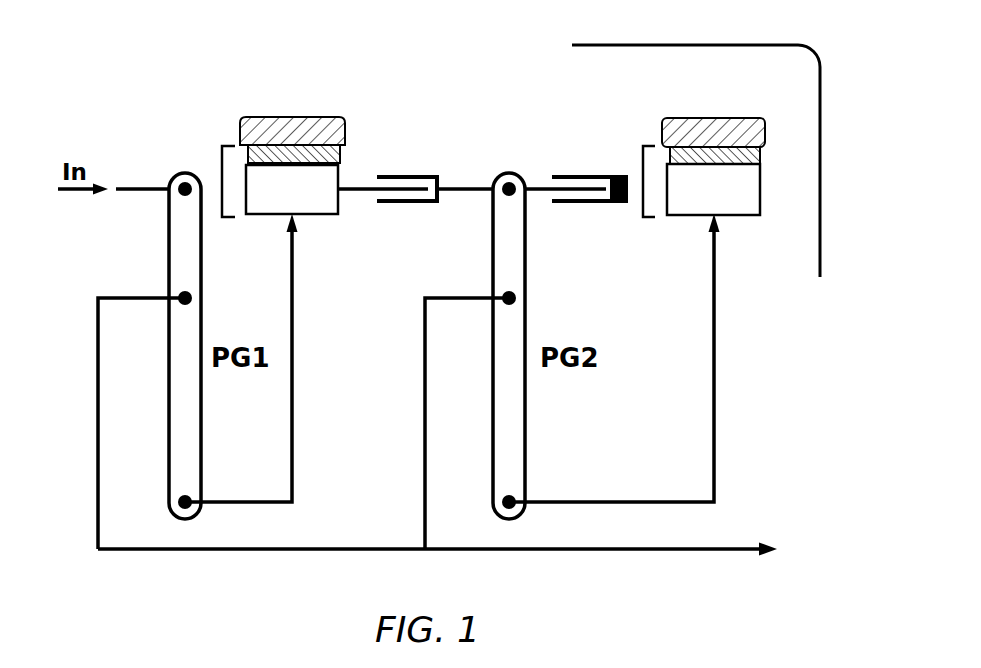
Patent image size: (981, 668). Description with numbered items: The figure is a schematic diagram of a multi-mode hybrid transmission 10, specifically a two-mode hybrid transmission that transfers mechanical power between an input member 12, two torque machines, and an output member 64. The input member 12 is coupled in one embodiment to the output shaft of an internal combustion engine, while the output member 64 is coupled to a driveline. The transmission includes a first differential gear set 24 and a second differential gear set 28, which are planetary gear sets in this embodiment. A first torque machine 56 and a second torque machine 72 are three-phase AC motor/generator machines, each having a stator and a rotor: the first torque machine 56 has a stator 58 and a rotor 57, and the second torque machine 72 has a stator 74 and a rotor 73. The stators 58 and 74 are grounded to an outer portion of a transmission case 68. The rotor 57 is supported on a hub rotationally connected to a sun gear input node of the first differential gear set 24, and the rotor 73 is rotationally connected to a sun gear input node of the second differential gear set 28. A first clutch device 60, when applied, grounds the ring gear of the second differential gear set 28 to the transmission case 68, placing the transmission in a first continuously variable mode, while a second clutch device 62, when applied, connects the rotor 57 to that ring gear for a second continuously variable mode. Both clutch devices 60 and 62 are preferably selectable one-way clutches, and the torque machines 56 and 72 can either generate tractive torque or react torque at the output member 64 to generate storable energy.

The multi-mode hybrid transmission 10 is at (824, 86).
The input member 12 is at (139, 187).
The first differential gear set 24 is at (183, 181).
The second differential gear set 28 is at (505, 181).
The first torque machine 56 is at (221, 170).
The rotor of the first torque machine 57 is at (340, 173).
The stator of the first torque machine 58 is at (279, 118).
The first clutch device C1 60 is at (580, 175).
The second clutch device C2 62 is at (407, 175).
The output member 64 is at (590, 552).
The transmission case 68 is at (303, 130).
The second torque machine 72 is at (642, 170).
The rotor of the second torque machine 73 is at (760, 182).
The stator of the second torque machine 74 is at (733, 148).